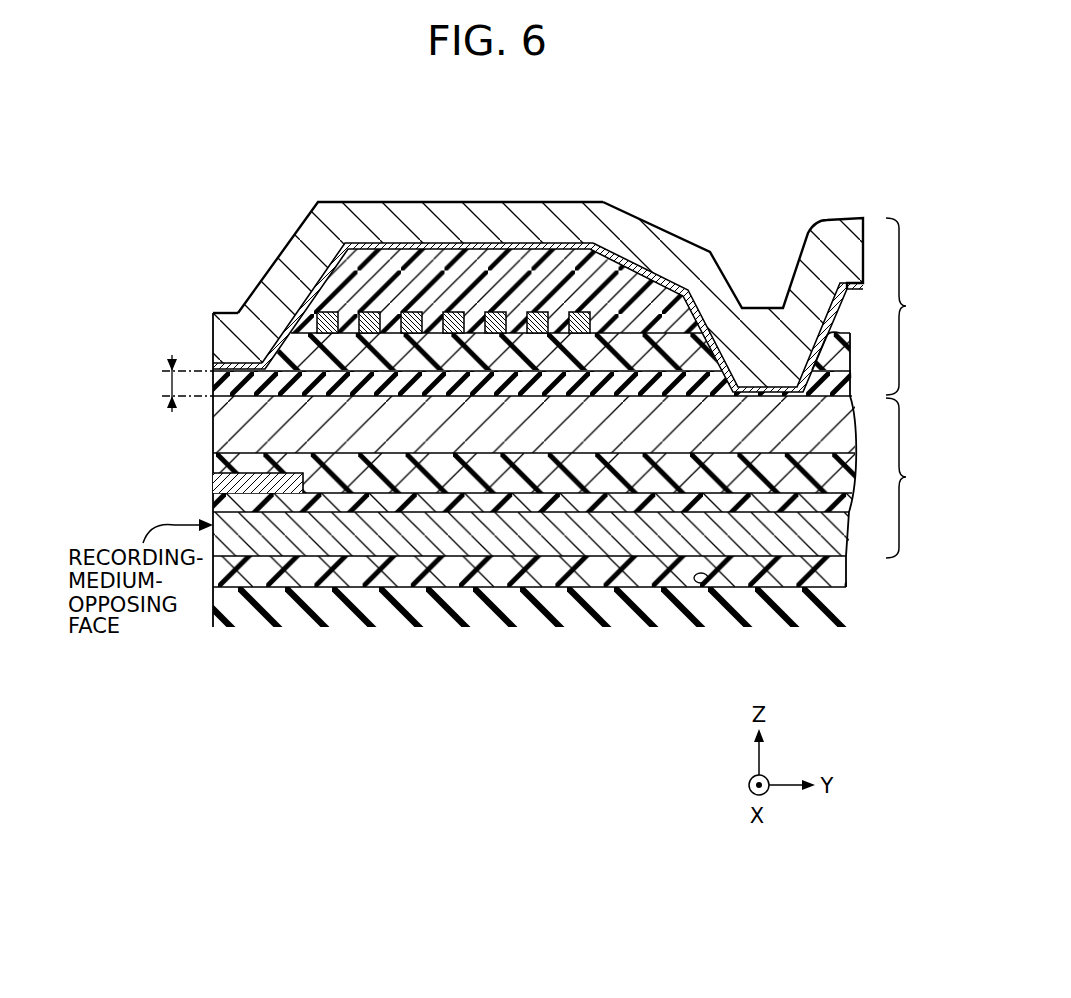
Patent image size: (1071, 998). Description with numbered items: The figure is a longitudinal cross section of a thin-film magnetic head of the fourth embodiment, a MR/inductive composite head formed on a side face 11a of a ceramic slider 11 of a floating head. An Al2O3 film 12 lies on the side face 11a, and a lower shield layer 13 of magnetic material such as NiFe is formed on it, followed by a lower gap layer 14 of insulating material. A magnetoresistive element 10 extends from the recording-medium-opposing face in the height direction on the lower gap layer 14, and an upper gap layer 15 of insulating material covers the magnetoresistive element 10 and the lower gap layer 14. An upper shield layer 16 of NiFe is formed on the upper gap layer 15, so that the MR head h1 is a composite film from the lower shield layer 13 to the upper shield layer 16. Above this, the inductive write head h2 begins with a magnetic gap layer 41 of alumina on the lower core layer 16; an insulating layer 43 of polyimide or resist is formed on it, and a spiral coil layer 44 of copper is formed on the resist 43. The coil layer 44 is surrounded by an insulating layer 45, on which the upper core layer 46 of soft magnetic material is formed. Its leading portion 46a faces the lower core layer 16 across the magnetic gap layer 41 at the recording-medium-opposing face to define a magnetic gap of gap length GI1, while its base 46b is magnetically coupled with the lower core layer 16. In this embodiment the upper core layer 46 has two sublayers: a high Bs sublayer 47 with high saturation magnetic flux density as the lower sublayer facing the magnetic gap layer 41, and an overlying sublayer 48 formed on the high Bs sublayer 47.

The magnetoresistive element 10 is at (240, 482).
The ceramic slider 11 is at (765, 603).
The side face 11a is at (703, 584).
The Al2O3 film 12 is at (625, 575).
The lower shield layer 13 is at (540, 540).
The lower gap layer 14 is at (455, 500).
The upper gap layer 15 is at (382, 468).
The upper shield layer 16 is at (237, 425).
The magnetic gap layer 41 is at (232, 377).
The insulating layer 43 is at (663, 290).
The coil layer 44 is at (452, 305).
The insulating layer 45 is at (525, 280).
The upper core layer 46 is at (580, 160).
The leading portion 46a is at (232, 343).
The base 46b is at (765, 353).
The high Bs sublayer 47 is at (592, 240).
The overlying sublayer 48 is at (622, 237).
The gap length GI1 is at (168, 383).
The MR head h1 is at (914, 478).
The inductive write head h2 is at (914, 306).